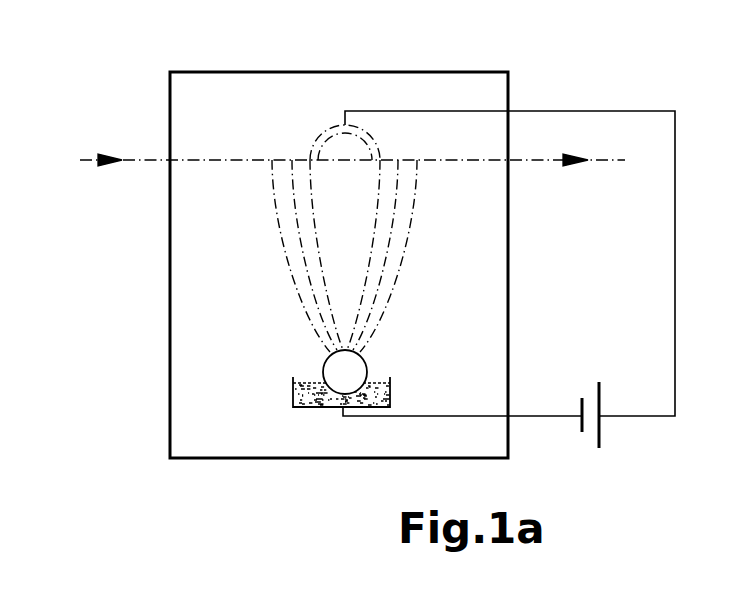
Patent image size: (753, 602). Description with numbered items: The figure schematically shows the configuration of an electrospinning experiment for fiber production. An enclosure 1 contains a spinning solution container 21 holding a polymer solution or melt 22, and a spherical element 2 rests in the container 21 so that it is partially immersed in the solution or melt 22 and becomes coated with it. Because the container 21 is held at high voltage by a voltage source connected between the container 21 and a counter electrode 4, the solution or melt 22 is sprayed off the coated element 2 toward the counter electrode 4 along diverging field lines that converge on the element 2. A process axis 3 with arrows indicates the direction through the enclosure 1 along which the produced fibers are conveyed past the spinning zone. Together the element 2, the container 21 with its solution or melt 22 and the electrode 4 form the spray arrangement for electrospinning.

The housing 1 is at (170, 262).
The ball / spherical element 2 is at (333, 368).
The beam axis 3 is at (153, 160).
The electrode field lines 4 is at (341, 124).
The spinning solution container 21 is at (293, 400).
The polymer solution or melt 22 is at (321, 400).